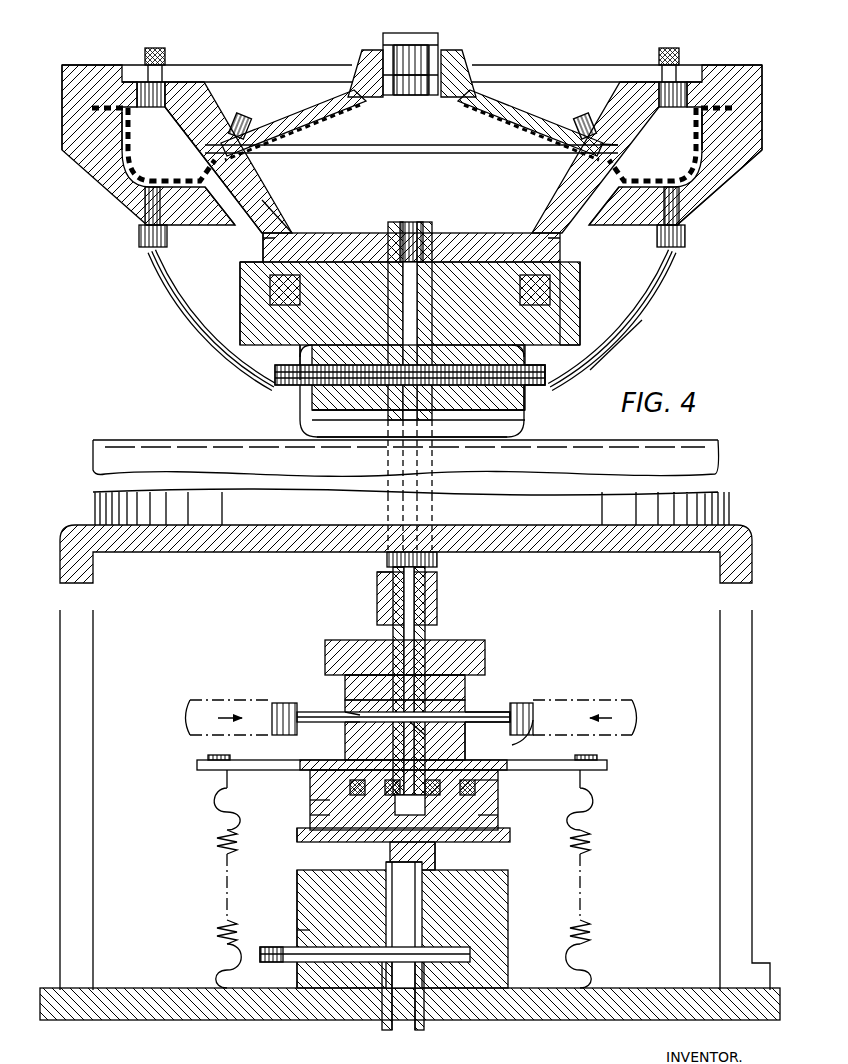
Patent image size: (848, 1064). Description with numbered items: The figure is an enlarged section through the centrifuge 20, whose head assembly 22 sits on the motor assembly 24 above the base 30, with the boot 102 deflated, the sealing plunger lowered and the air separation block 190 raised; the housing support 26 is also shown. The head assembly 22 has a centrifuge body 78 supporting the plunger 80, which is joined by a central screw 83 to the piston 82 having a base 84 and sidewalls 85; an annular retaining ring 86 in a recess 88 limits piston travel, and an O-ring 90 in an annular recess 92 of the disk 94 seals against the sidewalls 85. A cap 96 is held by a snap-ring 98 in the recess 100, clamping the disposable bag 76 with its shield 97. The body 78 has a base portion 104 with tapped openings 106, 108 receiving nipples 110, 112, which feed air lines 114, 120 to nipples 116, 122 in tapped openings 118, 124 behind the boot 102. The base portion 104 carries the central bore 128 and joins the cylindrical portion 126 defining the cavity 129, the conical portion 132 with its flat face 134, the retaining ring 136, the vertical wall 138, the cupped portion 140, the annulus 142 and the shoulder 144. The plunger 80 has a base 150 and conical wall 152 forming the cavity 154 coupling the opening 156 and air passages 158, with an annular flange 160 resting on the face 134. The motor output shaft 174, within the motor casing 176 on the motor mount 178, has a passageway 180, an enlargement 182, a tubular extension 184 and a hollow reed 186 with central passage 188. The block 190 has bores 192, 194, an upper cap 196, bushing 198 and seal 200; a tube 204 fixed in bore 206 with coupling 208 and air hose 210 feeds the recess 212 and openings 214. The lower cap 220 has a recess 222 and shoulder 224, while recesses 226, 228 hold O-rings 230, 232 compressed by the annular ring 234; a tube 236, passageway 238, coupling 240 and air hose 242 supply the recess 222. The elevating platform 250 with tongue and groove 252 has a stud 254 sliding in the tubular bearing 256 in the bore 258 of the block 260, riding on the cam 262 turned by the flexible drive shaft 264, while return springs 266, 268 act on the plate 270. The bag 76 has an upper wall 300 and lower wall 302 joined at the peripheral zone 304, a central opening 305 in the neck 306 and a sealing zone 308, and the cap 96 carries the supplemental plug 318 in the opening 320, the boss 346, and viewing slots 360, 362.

The centrifuge 20 is at (82, 38).
The head assembly 22 is at (200, 382).
The motor assembly 24 is at (78, 462).
The housing 26 is at (282, 437).
The base 30 is at (82, 1035).
The disposable bag 76 is at (412, 32).
The centrifuge body 78 is at (640, 288).
The plunger 80 is at (535, 232).
The piston 82 is at (262, 302).
The central screw 83 is at (424, 236).
The base 84 is at (395, 225).
The sidewalls 85 is at (555, 300).
The annular retaining ring 86 is at (535, 228).
The recess 88 is at (262, 267).
The O-ring 90 is at (553, 290).
The annular recess 92 is at (522, 347).
The disk 94 is at (478, 250).
The cap 96 is at (545, 122).
The shield 97 is at (602, 140).
The snap-ring 98 is at (706, 76).
The annular accommodating recess 100 is at (728, 66).
The boot 102 is at (740, 172).
The base portion 104 is at (520, 412).
The tapped opening 106 is at (305, 400).
The tapped opening 108 is at (524, 392).
The nipple 110 is at (278, 386).
The nipple 112 is at (548, 382).
The air line 114 is at (190, 336).
The nipple 116 is at (140, 238).
The tapped opening 118 is at (143, 212).
The air line 120 is at (626, 340).
The nipple 122 is at (688, 232).
The tapped opening 124 is at (690, 215).
The cylindrical portion 126 is at (572, 338).
The central bore 128 is at (318, 352).
The circular cavity 129 is at (268, 288).
The conical portion 132 is at (606, 240).
The flat interior face 134 is at (590, 168).
The retaining ring 136 is at (560, 152).
The vertical cylindrical wall 138 is at (200, 181).
The cupped portion 140 is at (766, 94).
The annulus 142 is at (738, 126).
The shoulder 144 is at (112, 110).
The base 150 is at (368, 244).
The conical wall 152 is at (248, 182).
The cavity 154 is at (290, 222).
The opening 156 is at (222, 246).
The air passages 158 is at (280, 203).
The annular flange 160 is at (210, 156).
The motor output shaft 174 is at (440, 556).
The motor casing 176 is at (98, 447).
The motor mount 178 is at (225, 550).
The passageway 180 is at (397, 606).
The shaft enlargement 182 is at (452, 425).
The tubular extension 184 is at (440, 612).
The hollow reed 186 is at (395, 594).
The central passage 188 is at (420, 568).
The air separation block 190 is at (465, 695).
The central bore 192 is at (440, 730).
The reduced bore 194 is at (345, 752).
The upper cap 196 is at (326, 642).
The stabilizing bushing 198 is at (380, 668).
The annular seal 200 is at (390, 705).
The tube 204 is at (308, 712).
The bore 206 is at (372, 710).
The threaded coupling 208 is at (272, 712).
The air hose 210 is at (200, 695).
The annular recess 212 is at (467, 712).
The radially extending openings 214 is at (378, 728).
The lower cap 220 is at (508, 836).
The circular recess 222 is at (425, 832).
The shoulder 224 is at (498, 796).
The recess 226 is at (352, 778).
The recess 228 is at (310, 796).
The O-ring 230 is at (480, 786).
The O-ring 232 is at (498, 818).
The annular ring 234 is at (388, 795).
The tube 236 is at (512, 740).
The vertical passageway 238 is at (430, 742).
The threaded coupling 240 is at (522, 704).
The air hose 242 is at (630, 700).
The elevating platform 250 is at (298, 838).
The tongue and groove 252 is at (390, 850).
The stud 254 is at (420, 880).
The tubular bearing 256 is at (422, 920).
The bore 258 is at (385, 918).
The block 260 is at (310, 927).
The cam 262 is at (440, 955).
The flexible drive shaft 264 is at (270, 962).
The return spring 266 is at (215, 942).
The return spring 268 is at (595, 950).
The plate 270 is at (600, 775).
The upper wall 300 is at (312, 120).
The lower wall 302 is at (352, 232).
The peripheral zone 304 is at (726, 106).
The central opening 305 is at (400, 96).
The neck 306 is at (452, 58).
The sealing zone 308 is at (680, 178).
The supplemental plug 318 is at (412, 56).
The opening 320 is at (165, 92).
The boss 346 is at (370, 62).
The slots 360 is at (242, 116).
The slots 362 is at (350, 95).